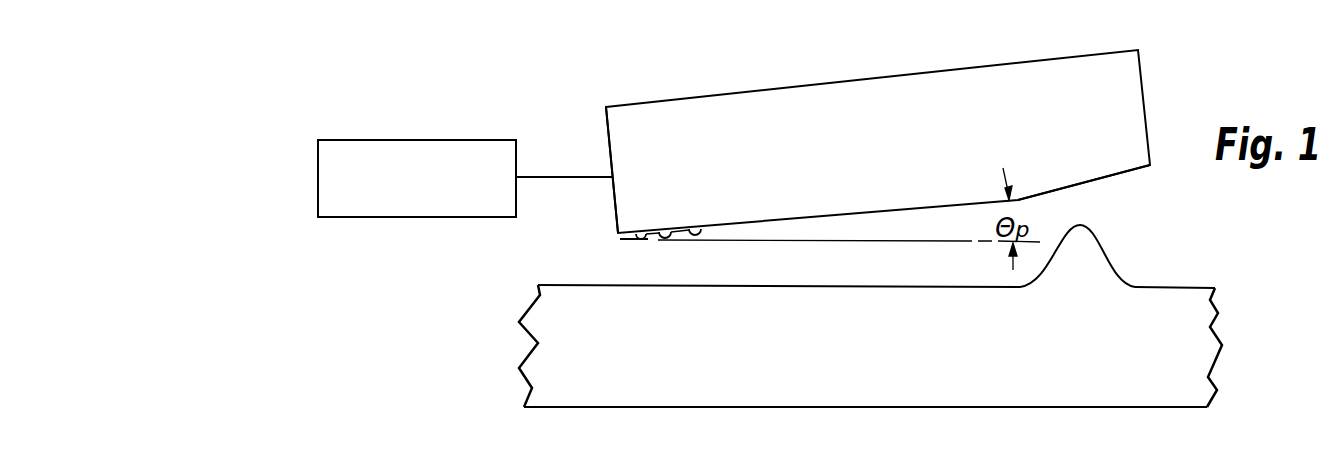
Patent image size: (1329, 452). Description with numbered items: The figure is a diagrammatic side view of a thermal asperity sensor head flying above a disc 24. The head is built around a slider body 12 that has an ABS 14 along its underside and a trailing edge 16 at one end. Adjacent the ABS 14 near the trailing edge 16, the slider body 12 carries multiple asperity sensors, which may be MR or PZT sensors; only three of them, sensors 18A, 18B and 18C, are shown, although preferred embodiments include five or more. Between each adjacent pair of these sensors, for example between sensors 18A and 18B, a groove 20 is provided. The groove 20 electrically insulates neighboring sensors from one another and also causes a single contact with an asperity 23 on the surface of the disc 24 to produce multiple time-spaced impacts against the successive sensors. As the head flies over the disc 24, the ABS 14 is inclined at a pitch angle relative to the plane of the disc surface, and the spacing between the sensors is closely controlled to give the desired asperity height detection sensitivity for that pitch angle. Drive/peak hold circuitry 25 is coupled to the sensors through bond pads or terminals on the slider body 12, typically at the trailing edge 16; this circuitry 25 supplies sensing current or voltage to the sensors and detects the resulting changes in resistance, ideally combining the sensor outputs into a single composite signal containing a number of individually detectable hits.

The slider body 12 is at (870, 77).
The ABS 14 is at (1125, 172).
The trailing edge 16 is at (608, 130).
The sensor 18A is at (627, 232).
The sensor 18B is at (660, 230).
The sensor 18C is at (688, 230).
The groove 20 is at (646, 231).
The asperity 23 is at (1103, 247).
The disc 24 is at (1210, 333).
The drive/peak hold circuitry 25 is at (405, 140).